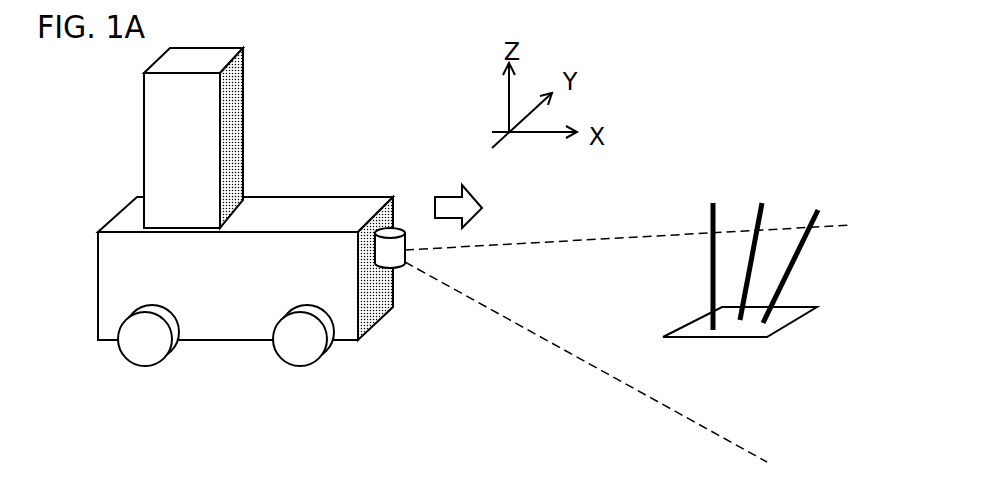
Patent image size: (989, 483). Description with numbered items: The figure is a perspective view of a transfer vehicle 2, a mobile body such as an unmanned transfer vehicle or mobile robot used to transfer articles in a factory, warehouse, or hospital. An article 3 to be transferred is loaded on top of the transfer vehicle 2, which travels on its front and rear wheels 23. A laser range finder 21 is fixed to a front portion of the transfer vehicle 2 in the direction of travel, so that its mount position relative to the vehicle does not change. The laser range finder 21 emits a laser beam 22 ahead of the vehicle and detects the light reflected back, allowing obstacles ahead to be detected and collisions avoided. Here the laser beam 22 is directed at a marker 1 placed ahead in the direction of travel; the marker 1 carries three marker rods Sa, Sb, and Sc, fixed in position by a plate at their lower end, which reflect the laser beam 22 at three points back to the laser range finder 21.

The marker 1 is at (647, 330).
The transfer vehicle 2 is at (83, 192).
The article 3 is at (242, 50).
The laser range finder 21 is at (405, 228).
The laser beam 22 is at (483, 308).
The front and rear wheels 23 is at (142, 360).